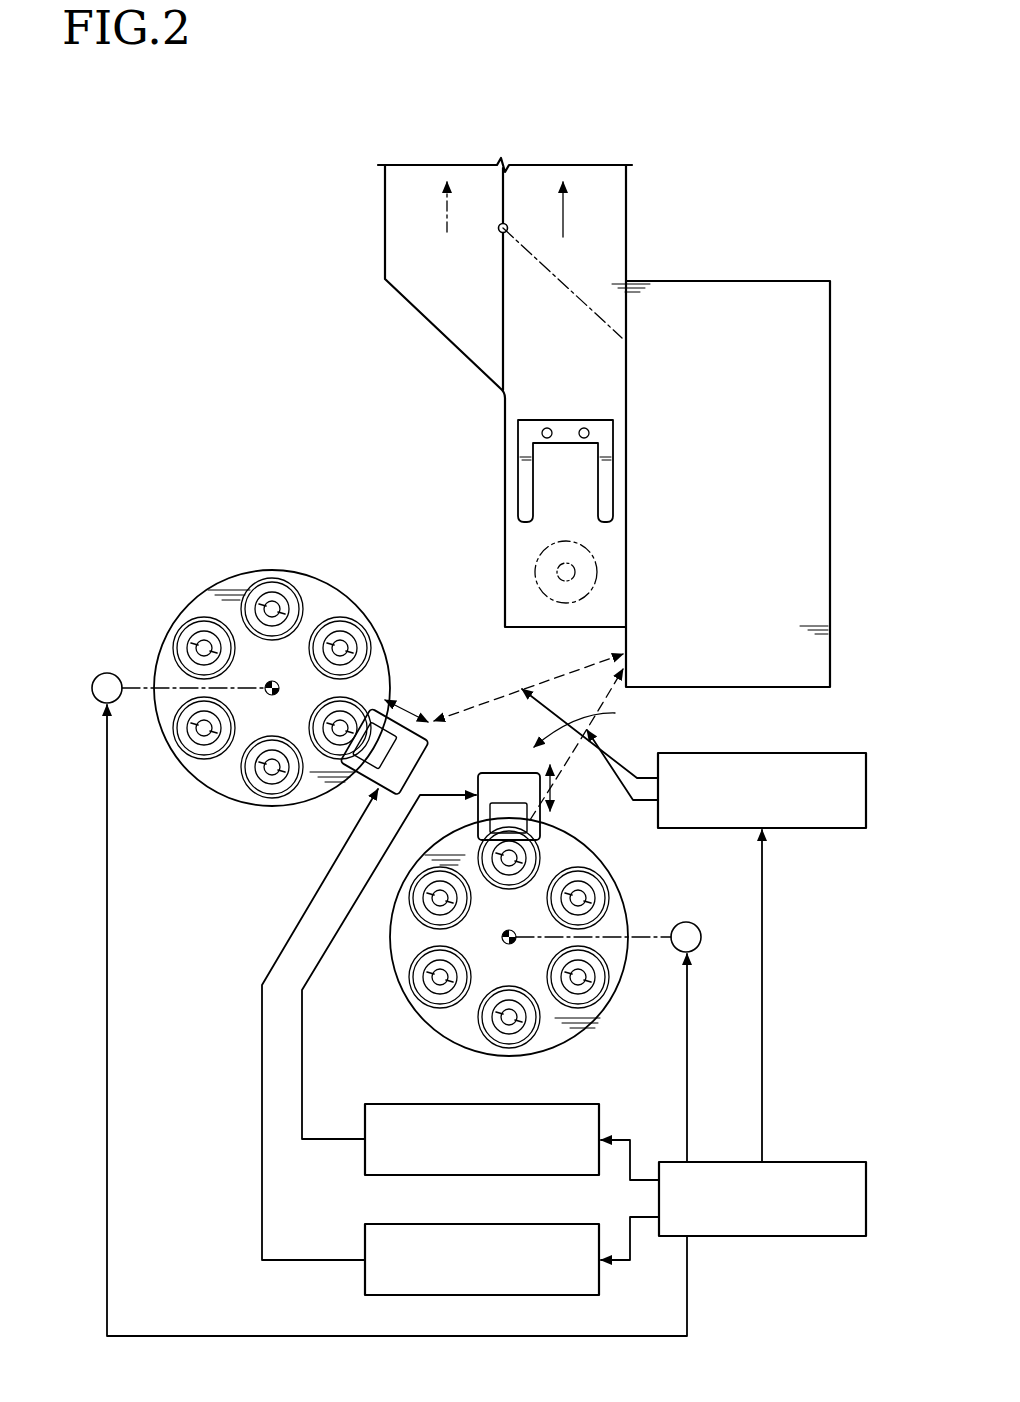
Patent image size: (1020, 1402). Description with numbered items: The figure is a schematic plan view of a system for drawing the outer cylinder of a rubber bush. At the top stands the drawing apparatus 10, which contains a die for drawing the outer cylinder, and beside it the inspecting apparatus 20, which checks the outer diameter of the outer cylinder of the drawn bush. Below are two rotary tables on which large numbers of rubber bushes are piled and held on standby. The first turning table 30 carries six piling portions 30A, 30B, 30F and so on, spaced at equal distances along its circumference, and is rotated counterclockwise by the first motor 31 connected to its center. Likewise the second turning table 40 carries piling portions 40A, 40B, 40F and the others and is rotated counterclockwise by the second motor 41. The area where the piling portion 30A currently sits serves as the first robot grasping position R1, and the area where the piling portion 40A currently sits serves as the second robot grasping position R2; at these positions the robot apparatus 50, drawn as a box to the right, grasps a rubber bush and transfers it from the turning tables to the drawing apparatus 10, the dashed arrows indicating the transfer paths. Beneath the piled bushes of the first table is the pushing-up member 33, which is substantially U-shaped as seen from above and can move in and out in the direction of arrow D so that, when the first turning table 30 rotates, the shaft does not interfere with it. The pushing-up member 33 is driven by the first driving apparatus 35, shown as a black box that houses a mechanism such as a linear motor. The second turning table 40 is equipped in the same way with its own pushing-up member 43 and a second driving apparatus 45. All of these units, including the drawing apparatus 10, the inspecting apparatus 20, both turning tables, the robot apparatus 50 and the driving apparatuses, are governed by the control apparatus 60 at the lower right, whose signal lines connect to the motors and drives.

The drawing apparatus 10 is at (712, 280).
The inspecting apparatus 20 is at (502, 478).
The first turning table 30 is at (622, 977).
The piling portion 30A is at (560, 837).
The piling portion 30B is at (610, 883).
The piling portion 30F is at (413, 920).
The first motor 31 is at (701, 943).
The pushing-up member 33 is at (497, 778).
The first driving apparatus 35 is at (548, 1104).
The second turning table 40 is at (217, 581).
The piling portion 40A is at (362, 692).
The piling portion 40B is at (297, 799).
The piling portion 40F is at (360, 630).
The second motor 41 is at (107, 673).
The pushing-up member 43 is at (410, 773).
The second driving apparatus 45 is at (600, 1272).
The robot apparatus 50 is at (762, 753).
The control apparatus 60 is at (787, 1161).
The first robot grasping position R1 is at (598, 718).
The second robot grasping position R2 is at (452, 703).
The arrow D direction D is at (481, 744).